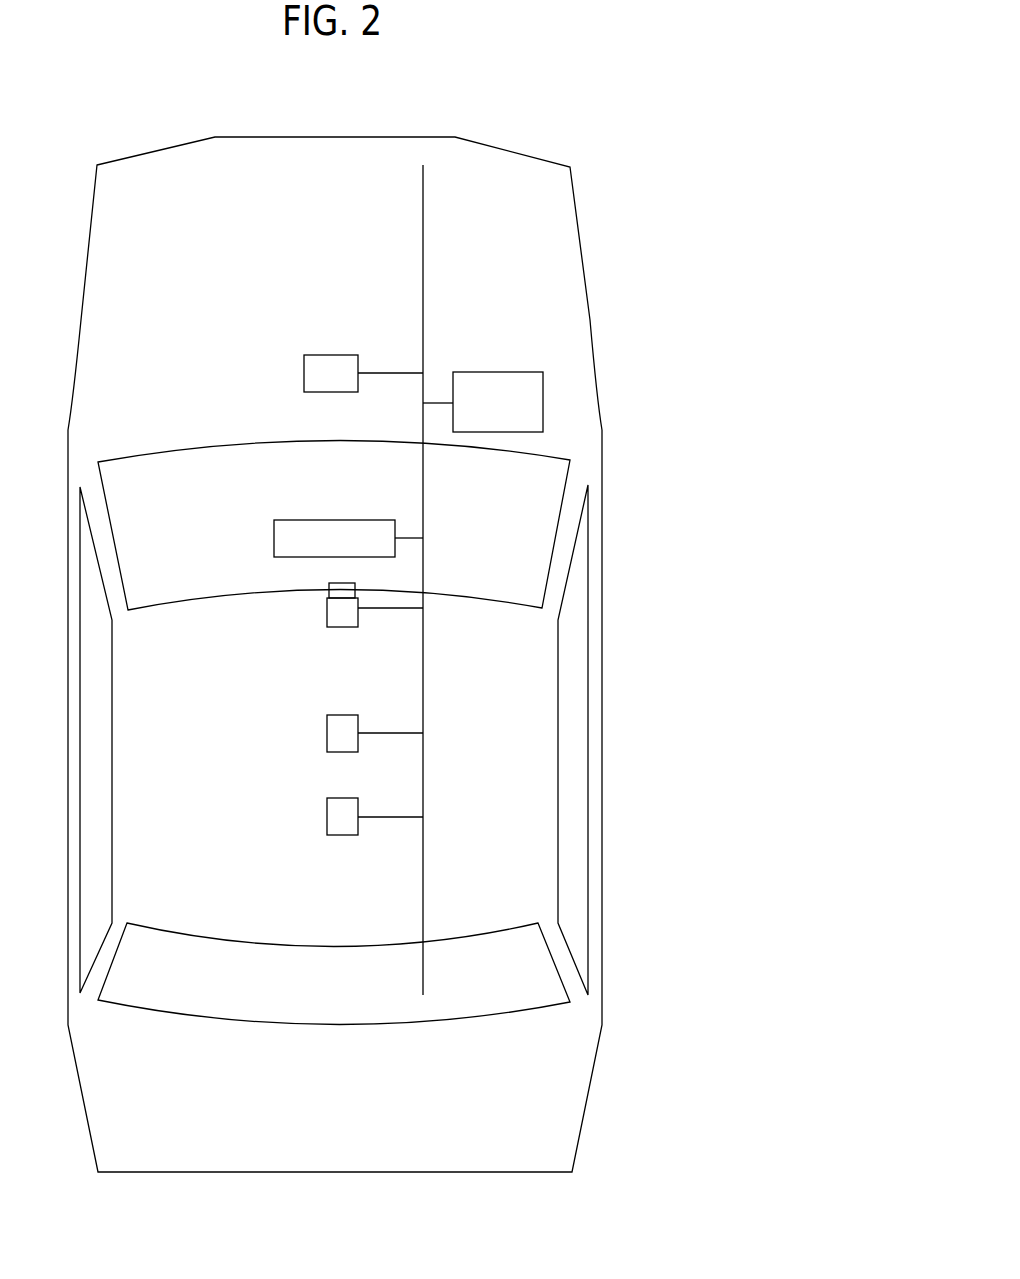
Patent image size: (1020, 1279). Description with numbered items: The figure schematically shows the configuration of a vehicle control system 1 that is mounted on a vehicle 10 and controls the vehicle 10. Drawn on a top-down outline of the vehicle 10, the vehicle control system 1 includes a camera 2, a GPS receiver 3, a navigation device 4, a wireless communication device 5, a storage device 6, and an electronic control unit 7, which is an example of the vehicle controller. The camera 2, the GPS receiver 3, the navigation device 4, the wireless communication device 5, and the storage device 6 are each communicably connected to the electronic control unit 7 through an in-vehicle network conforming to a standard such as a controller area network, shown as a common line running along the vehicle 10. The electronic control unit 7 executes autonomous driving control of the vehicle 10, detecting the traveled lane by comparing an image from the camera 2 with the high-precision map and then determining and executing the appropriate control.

The vehicle control system 1 is at (465, 679).
The vehicle 10 is at (602, 942).
The camera 2 is at (327, 612).
The GPS receiver 3 is at (327, 730).
The navigation device 4 is at (274, 533).
The wireless communication device 5 is at (327, 813).
The storage device 6 is at (304, 370).
The electronic control unit 7 is at (543, 388).